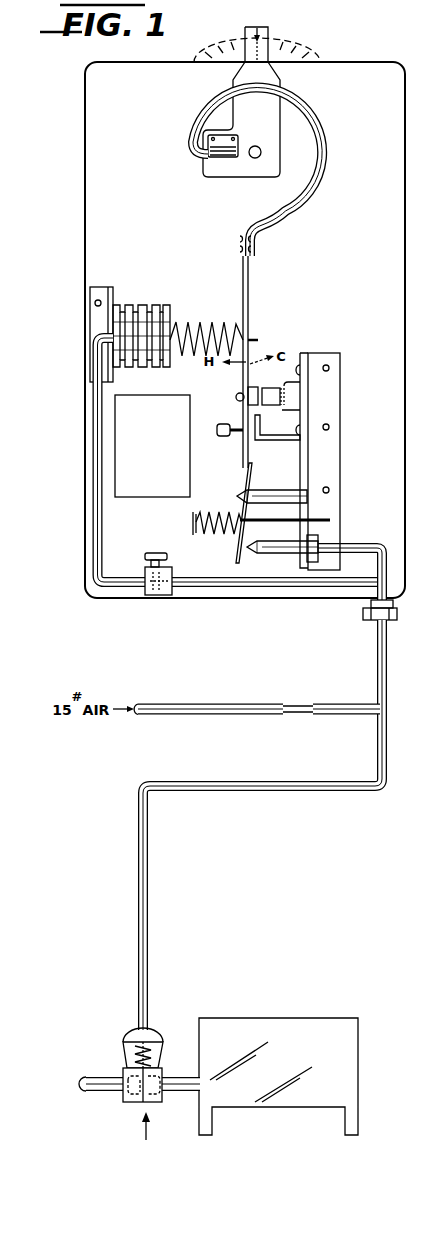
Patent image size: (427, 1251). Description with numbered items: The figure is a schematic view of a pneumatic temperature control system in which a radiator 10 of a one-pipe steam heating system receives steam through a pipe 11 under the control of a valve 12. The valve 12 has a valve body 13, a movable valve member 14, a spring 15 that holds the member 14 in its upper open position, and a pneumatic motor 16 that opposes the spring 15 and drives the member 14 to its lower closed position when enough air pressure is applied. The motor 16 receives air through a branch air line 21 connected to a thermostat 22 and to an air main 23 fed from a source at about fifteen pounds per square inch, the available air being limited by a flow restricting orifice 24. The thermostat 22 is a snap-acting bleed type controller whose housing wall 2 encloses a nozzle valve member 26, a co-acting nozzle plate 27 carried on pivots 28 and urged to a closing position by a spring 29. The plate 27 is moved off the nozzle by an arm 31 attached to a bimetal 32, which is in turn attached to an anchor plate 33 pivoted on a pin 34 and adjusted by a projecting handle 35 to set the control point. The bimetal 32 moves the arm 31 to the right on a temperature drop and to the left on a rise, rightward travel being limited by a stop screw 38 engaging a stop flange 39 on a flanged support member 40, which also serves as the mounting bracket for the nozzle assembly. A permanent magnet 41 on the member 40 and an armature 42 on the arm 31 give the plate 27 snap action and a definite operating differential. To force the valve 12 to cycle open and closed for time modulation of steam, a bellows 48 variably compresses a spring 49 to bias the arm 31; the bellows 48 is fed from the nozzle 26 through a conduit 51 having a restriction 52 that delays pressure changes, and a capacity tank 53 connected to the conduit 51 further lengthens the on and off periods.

The housing wall 2 is at (397, 117).
The radiator 10 is at (285, 1025).
The pipe 11 is at (98, 1086).
The valve 12 is at (146, 1135).
The valve body 13 is at (153, 1098).
The movable valve member 14 is at (142, 1094).
The spring 15 is at (123, 1052).
The pneumatic motor 16 is at (132, 1030).
The branch air line 21 is at (387, 692).
The thermostat 22 is at (349, 59).
The air main 23 is at (200, 703).
The flow restricting orifice 24 is at (295, 704).
The nozzle valve member 26 is at (275, 556).
The nozzle plate 27 is at (247, 470).
The pivots 28 is at (272, 492).
The spring 29 is at (208, 537).
The arm 31 is at (250, 310).
The bimetal 32 is at (289, 217).
The anchor plate 33 is at (210, 168).
The pin 34 is at (255, 158).
The handle 35 is at (268, 33).
The stop screw 38 is at (227, 437).
The stop flange 39 is at (258, 440).
The flanged support member 40 is at (328, 355).
The permanent magnet 41 is at (267, 400).
The armature 42 is at (252, 392).
The bellows 48 is at (143, 305).
The spring 49 is at (202, 320).
The conduit 51 is at (97, 513).
The restriction 52 is at (149, 553).
The capacity tank 53 is at (170, 400).